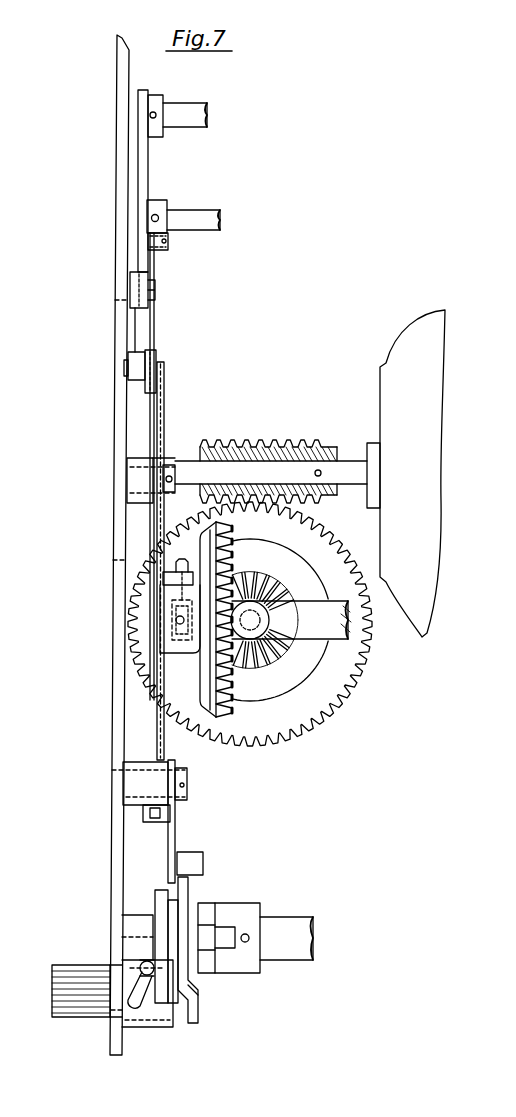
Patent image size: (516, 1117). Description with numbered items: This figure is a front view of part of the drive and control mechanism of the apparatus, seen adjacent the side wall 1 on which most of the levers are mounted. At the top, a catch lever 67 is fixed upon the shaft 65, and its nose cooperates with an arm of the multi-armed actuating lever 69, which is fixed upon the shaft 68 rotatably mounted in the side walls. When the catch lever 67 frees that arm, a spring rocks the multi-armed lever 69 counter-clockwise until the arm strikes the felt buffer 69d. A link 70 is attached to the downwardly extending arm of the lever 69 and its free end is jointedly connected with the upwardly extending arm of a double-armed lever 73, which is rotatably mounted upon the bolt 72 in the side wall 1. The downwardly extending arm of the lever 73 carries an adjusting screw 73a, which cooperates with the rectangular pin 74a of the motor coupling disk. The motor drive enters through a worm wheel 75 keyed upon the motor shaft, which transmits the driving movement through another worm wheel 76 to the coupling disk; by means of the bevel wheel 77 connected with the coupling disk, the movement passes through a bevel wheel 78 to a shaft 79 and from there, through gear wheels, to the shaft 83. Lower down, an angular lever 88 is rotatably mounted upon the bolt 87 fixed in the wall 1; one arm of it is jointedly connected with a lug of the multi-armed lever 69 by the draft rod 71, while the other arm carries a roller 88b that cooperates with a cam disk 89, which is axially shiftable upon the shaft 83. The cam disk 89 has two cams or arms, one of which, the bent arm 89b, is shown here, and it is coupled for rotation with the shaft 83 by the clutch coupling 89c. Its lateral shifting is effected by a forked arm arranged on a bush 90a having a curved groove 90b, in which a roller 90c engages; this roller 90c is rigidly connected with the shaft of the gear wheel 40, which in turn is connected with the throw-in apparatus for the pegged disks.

The side wall 1 is at (122, 551).
The gear wheel 40 is at (66, 1002).
The shaft 65 is at (178, 112).
The catch lever 67 is at (140, 178).
The shaft 68 is at (212, 222).
The multi-armed actuating lever 69 is at (158, 208).
The felt buffer 69d is at (140, 298).
The link 70 is at (158, 357).
The draft rod 71 is at (150, 415).
The bolt 72 is at (134, 480).
The double-armed lever 73 is at (162, 403).
The adjusting screw 73a is at (195, 555).
The rectangular pin 74a is at (160, 632).
The worm wheel 75 is at (257, 442).
The worm wheel 76 is at (338, 668).
The bevel wheel 77 is at (270, 660).
The bevel wheel 78 is at (227, 708).
The shaft 79 is at (323, 625).
The shaft 83 is at (288, 950).
The bolt 87 is at (132, 790).
The angular lever 88 is at (173, 830).
The roller 88b is at (195, 858).
The cam disk 89 is at (183, 897).
The bent cam arm 89b is at (199, 1017).
The clutch coupling 89c is at (215, 938).
The bush 90a is at (145, 1022).
The curved groove 90b is at (133, 1010).
The roller 90c is at (148, 977).